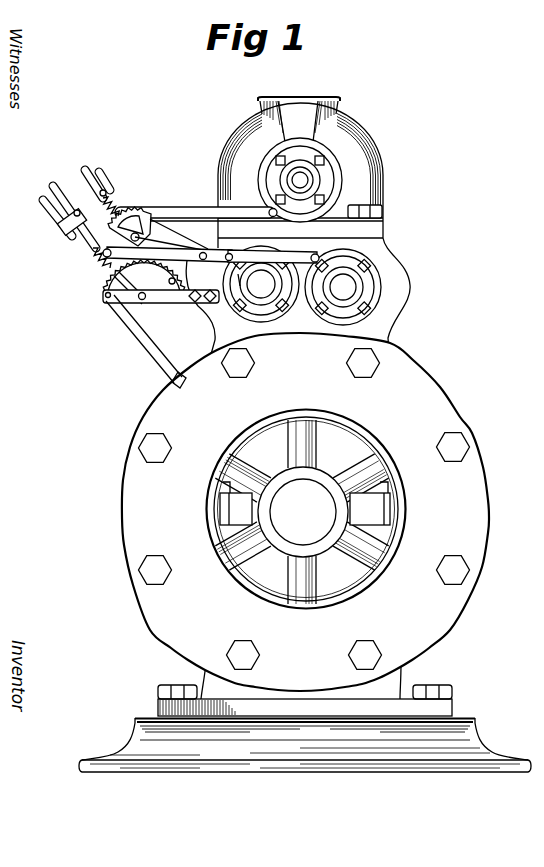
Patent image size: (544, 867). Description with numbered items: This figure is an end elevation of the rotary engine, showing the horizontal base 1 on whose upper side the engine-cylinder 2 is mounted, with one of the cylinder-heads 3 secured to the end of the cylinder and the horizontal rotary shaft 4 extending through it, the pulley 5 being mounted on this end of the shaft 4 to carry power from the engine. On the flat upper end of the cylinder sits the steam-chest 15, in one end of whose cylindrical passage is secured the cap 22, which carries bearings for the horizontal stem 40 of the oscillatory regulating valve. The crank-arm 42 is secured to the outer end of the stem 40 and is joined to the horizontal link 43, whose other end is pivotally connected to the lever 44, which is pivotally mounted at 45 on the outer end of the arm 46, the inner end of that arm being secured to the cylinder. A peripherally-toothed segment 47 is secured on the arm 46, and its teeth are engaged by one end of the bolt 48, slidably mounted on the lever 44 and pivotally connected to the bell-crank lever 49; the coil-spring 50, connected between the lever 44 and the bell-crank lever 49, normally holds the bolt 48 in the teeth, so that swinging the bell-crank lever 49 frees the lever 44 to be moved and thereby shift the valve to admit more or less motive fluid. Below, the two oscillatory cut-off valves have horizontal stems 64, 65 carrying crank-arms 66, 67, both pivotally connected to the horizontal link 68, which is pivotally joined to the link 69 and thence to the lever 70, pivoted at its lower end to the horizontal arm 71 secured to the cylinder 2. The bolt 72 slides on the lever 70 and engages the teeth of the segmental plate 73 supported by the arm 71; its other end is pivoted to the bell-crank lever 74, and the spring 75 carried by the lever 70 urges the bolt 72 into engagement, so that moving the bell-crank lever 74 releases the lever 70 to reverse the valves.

The horizontal base 1 is at (305, 728).
The engine-cylinder 2 is at (280, 458).
The cylinder-heads 3 is at (305, 512).
The horizontal rotary shaft 4 is at (305, 512).
The pulley 5 is at (400, 505).
The steam-chest 15 is at (380, 176).
The cap 22 is at (305, 157).
The horizontal stem 40 is at (300, 181).
The crank-arm 42 is at (294, 208).
The horizontal link 43 is at (196, 200).
The lever 44 is at (108, 205).
The pivot 45 is at (145, 235).
The arm 46 is at (178, 248).
The peripherally-toothed segment 47 is at (146, 208).
The bolt 48 is at (88, 234).
The bell-crank lever 49 is at (100, 185).
The coil-spring 50 is at (115, 195).
The horizontal stem 64 is at (343, 286).
The horizontal stem 65 is at (244, 284).
The crank-arm 66 is at (327, 262).
The crank-arm 67 is at (240, 274).
The horizontal link 68 is at (273, 249).
The link 69 is at (238, 284).
The lever 70 is at (130, 341).
The horizontal arm 71 is at (165, 302).
The bolt 72 is at (72, 236).
The segmental plate 73 is at (110, 280).
The bell-crank lever 74 is at (63, 208).
The spring 75 is at (93, 263).